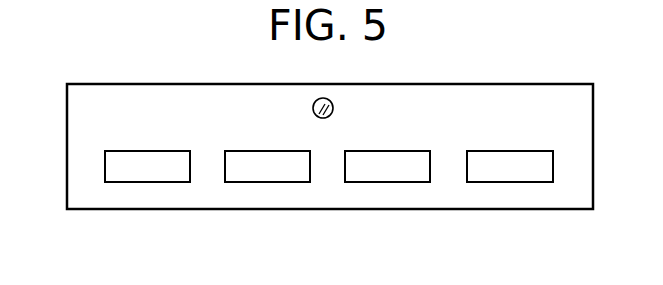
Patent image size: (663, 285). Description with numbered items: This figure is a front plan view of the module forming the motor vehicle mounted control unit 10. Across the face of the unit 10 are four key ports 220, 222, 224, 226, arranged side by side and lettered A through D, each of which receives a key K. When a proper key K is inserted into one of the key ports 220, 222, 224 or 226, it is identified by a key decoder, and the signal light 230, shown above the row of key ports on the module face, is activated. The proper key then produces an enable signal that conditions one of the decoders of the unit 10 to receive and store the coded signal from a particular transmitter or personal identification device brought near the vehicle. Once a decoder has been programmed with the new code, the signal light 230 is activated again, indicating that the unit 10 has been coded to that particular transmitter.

The control unit 10 is at (500, 83).
The key port 220 is at (153, 177).
The key port 222 is at (265, 177).
The key port 224 is at (390, 177).
The key port 226 is at (518, 177).
The signal light 230 is at (330, 101).